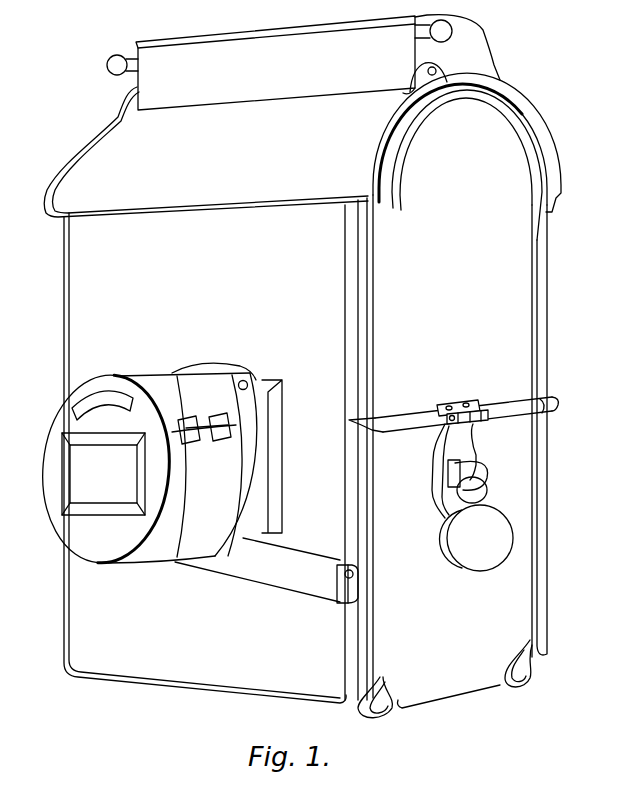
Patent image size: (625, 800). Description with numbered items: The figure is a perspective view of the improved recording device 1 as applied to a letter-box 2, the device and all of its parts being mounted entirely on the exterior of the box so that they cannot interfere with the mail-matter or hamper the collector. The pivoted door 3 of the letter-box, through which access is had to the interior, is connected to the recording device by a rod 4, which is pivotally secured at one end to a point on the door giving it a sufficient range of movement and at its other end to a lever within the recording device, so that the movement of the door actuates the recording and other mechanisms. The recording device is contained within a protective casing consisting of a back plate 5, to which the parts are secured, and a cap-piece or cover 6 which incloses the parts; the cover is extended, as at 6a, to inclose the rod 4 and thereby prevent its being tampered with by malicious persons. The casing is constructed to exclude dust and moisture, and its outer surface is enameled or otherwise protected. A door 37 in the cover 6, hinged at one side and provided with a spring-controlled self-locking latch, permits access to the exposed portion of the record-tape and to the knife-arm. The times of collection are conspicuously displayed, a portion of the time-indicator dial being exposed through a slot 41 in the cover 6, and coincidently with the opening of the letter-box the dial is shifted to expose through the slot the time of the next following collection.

The recording device 1 is at (150, 455).
The letter-box 2 is at (216, 456).
The pivoted door 3 is at (516, 583).
The rod 4 is at (337, 590).
The back plate 5 is at (206, 373).
The cap-piece or cover 6 is at (52, 462).
The extension of the cap-piece or cover 6a is at (238, 566).
The door 37 is at (182, 468).
The slot 41 is at (99, 392).